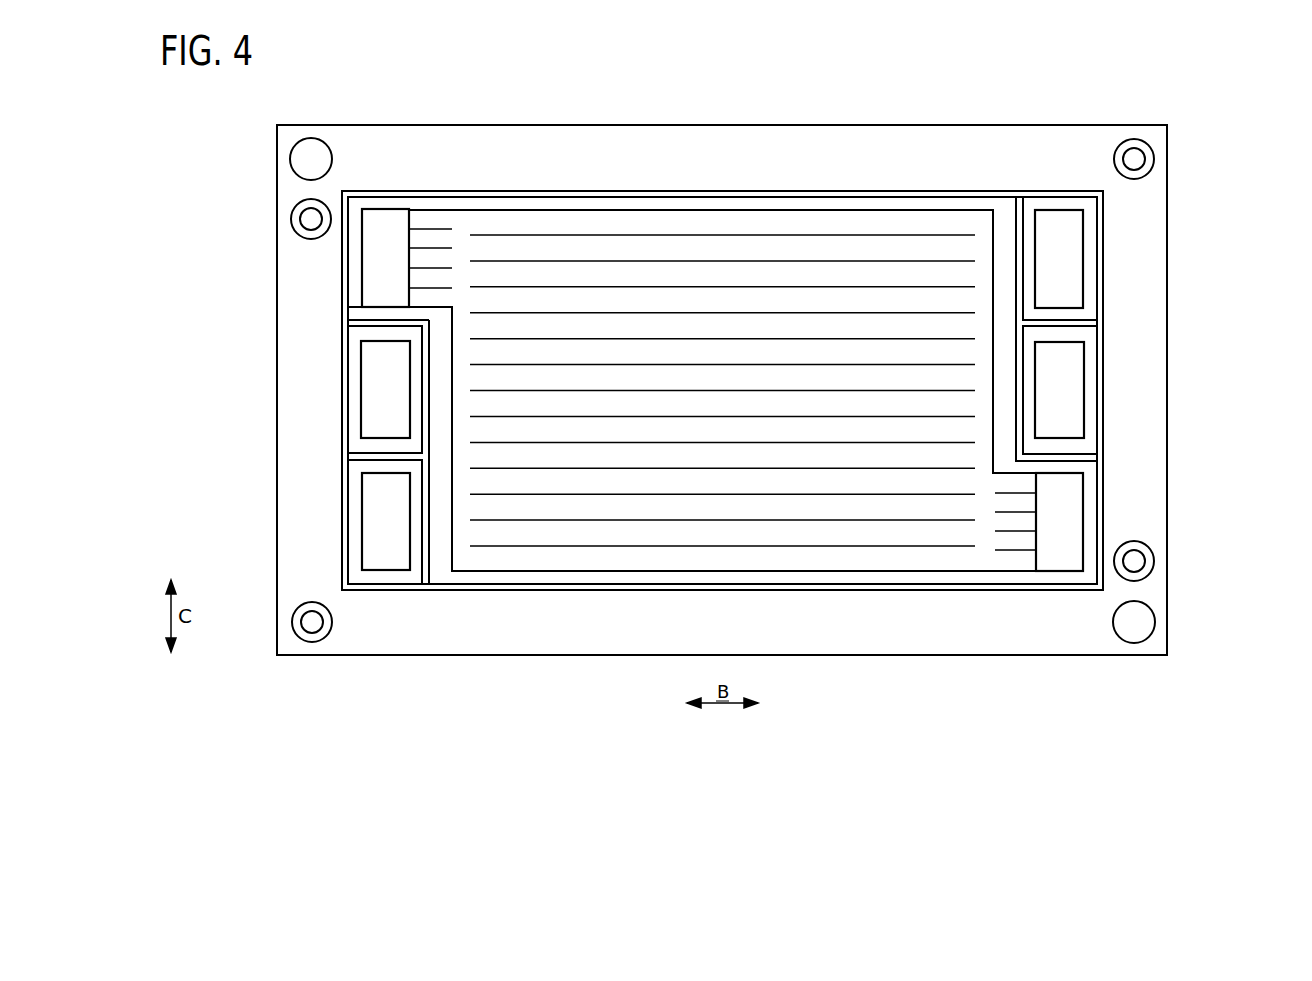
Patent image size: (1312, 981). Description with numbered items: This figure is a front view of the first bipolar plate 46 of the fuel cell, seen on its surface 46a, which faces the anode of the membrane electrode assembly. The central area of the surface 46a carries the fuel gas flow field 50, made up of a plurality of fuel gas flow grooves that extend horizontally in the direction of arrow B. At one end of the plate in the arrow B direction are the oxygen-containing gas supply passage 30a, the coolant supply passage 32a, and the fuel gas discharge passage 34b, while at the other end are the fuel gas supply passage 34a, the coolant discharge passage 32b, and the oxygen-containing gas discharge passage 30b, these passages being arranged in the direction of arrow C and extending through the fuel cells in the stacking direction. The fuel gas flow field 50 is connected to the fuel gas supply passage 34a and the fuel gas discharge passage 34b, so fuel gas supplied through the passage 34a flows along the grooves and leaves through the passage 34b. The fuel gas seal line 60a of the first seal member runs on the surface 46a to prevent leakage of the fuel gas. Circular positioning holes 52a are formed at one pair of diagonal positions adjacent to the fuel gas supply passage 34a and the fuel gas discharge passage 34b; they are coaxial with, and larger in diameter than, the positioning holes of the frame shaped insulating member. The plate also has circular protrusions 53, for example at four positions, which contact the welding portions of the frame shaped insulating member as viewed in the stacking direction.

The first bipolar plate 46 is at (383, 87).
The surface 46a is at (925, 143).
The fuel gas flow field 50 is at (759, 273).
The fuel gas seal line 60a is at (597, 192).
The positioning holes 52a is at (298, 159).
The protrusions 53 is at (298, 219).
The oxygen-containing gas supply passage 30a is at (1070, 247).
The oxygen-containing gas discharge passage 30b is at (374, 533).
The coolant supply passage 32a is at (1070, 404).
The coolant discharge passage 32b is at (373, 382).
The fuel gas supply passage 34a is at (373, 287).
The fuel gas discharge passage 34b is at (1072, 494).